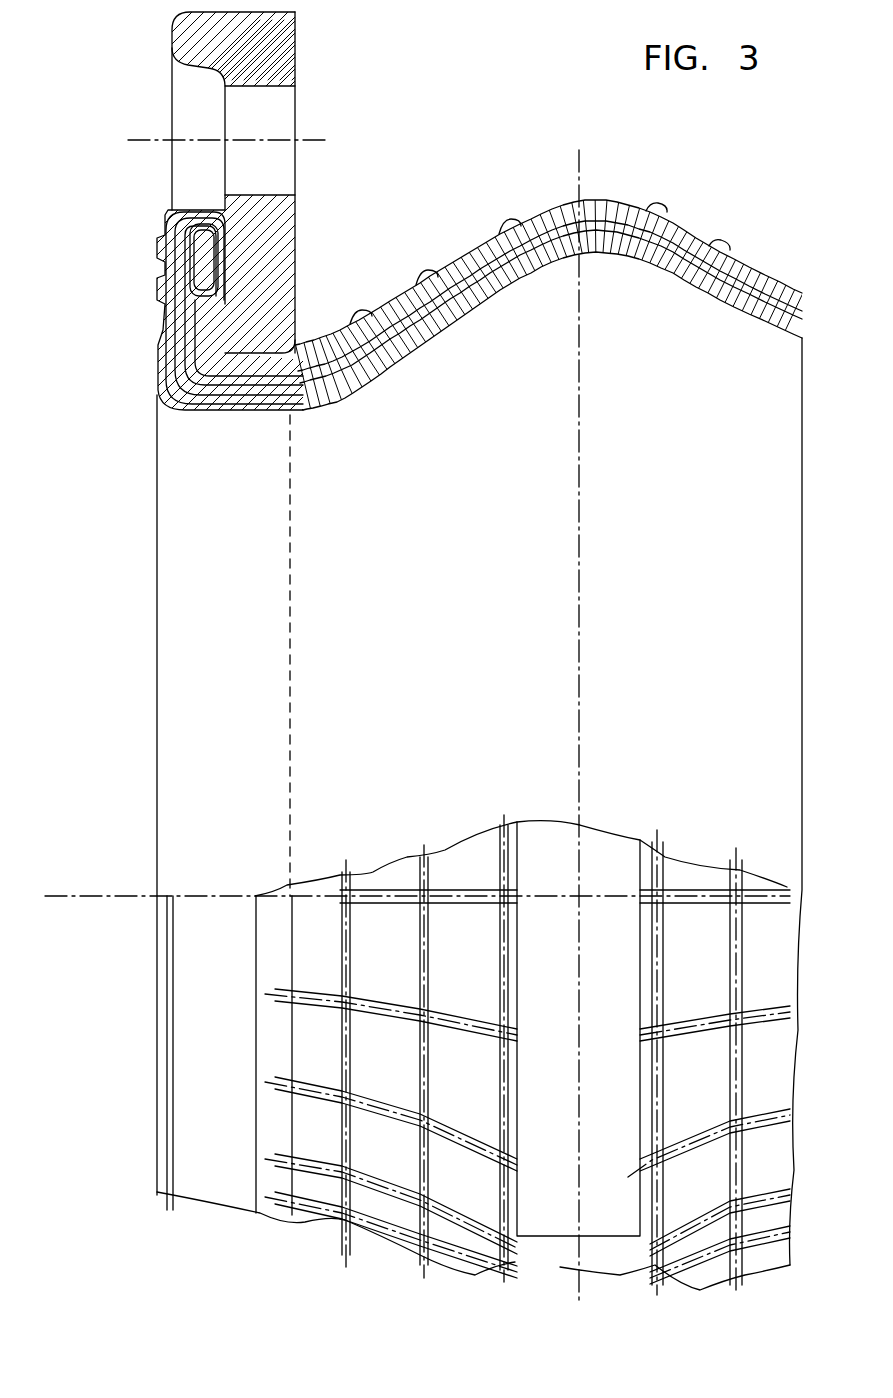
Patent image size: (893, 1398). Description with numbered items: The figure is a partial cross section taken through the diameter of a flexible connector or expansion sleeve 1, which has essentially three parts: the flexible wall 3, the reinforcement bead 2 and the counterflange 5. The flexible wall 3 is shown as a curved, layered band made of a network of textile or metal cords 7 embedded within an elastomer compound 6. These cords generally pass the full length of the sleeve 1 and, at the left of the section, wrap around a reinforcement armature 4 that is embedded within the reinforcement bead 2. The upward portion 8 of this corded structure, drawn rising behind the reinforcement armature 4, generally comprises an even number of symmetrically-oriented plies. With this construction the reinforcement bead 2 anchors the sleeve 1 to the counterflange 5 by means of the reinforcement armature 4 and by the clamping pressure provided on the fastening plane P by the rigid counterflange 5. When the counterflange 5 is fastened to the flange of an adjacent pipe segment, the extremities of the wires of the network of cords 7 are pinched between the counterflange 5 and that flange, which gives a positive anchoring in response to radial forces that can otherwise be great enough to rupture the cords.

The expansion sleeve 1 is at (385, 1060).
The reinforcement bead 2 is at (180, 140).
The flexible wall 3 is at (622, 208).
The reinforcement armature 4 is at (232, 236).
The counterflange 5 is at (311, 56).
The elastomer compound 6 is at (403, 355).
The textile or metal cords 7 is at (305, 411).
The upward portion 8 is at (240, 279).
The fastening plane P is at (146, 605).